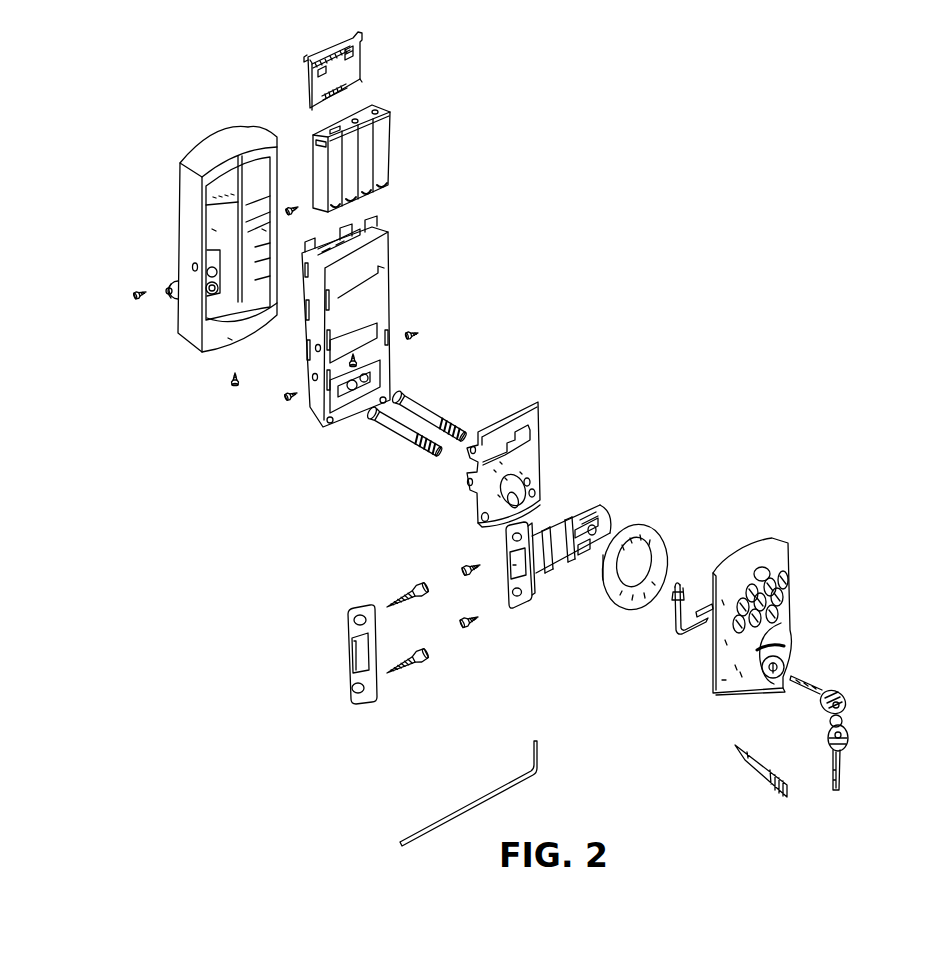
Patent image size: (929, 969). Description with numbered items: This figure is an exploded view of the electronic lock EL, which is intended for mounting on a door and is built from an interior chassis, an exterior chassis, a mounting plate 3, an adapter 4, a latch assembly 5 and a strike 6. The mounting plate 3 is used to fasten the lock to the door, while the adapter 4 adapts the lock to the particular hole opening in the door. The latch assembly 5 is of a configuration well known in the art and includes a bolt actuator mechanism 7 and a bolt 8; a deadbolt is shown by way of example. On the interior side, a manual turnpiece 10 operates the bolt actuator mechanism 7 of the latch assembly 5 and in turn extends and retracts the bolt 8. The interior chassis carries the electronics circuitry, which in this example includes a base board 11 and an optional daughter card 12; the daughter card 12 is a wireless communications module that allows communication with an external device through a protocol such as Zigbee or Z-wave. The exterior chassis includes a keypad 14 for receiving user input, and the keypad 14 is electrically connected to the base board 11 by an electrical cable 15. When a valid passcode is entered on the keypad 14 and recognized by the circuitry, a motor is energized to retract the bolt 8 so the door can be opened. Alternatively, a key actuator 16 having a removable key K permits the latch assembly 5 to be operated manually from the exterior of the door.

The mounting plate 3 is at (540, 415).
The adapter 4 is at (667, 550).
The latch assembly 5 is at (572, 549).
The strike 6 is at (347, 675).
The bolt actuator mechanism 7 is at (556, 565).
The bolt 8 is at (505, 568).
The manual turnpiece 10 is at (163, 297).
The base board 11 is at (387, 278).
The daughter card 12 is at (313, 90).
The keypad 14 is at (802, 588).
The electrical cable 15 is at (678, 630).
The key actuator 16 is at (788, 616).
The removable key K is at (840, 693).
The electronic lock EL is at (594, 243).